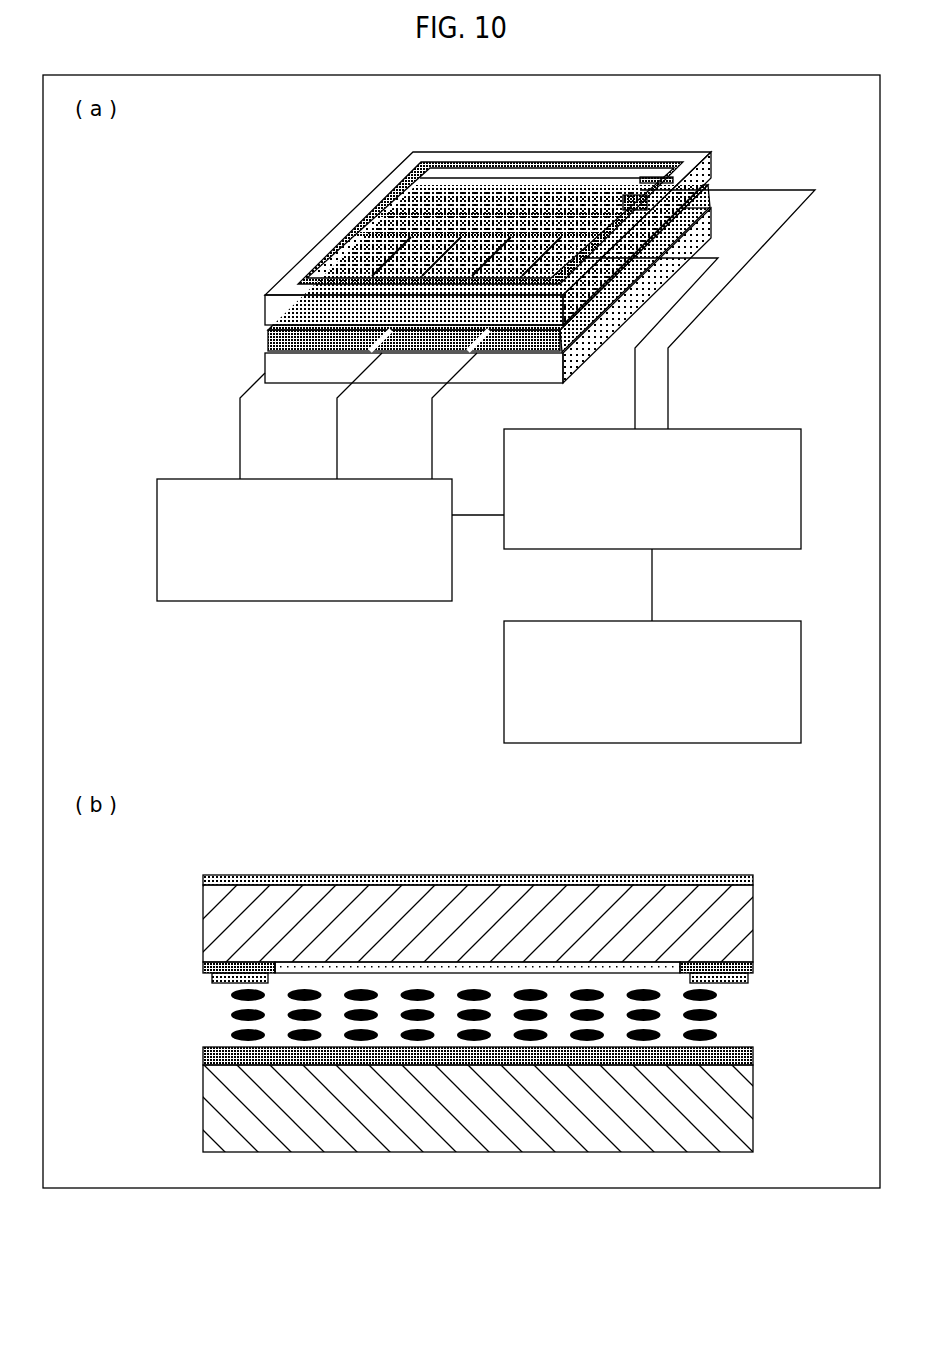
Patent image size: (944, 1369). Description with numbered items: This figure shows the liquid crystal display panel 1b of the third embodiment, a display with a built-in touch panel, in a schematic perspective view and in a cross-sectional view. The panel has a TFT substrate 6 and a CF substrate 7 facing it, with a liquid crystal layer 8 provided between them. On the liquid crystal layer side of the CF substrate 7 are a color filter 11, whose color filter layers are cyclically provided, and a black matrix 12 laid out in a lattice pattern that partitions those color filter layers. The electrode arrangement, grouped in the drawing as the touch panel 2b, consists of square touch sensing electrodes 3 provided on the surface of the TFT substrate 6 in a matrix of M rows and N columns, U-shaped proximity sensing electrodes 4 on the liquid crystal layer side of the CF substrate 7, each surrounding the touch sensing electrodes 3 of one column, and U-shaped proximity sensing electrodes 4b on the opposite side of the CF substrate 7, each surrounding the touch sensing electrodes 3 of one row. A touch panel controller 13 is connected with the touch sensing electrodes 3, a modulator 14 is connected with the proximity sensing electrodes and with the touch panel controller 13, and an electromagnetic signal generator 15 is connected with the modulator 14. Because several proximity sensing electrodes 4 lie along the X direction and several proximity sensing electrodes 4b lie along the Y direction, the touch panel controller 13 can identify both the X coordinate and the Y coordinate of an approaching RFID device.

The liquid crystal display panel 1b is at (469, 625).
The electrode structure (sensor section) 2b is at (461, 601).
The touch sensing electrodes 3 is at (343, 330).
The proximity sensing electrodes 4 is at (400, 203).
The proximity sensing electrodes 4b is at (408, 176).
The TFT substrate 6 is at (265, 359).
The CF substrate 7 is at (265, 308).
The liquid crystal layer 8 is at (755, 1009).
The color filter 11 is at (462, 962).
The black matrix 12 is at (245, 962).
The touch panel controller 13 is at (157, 520).
The modulator 14 is at (801, 462).
The electromagnetic signal generator 15 is at (801, 653).